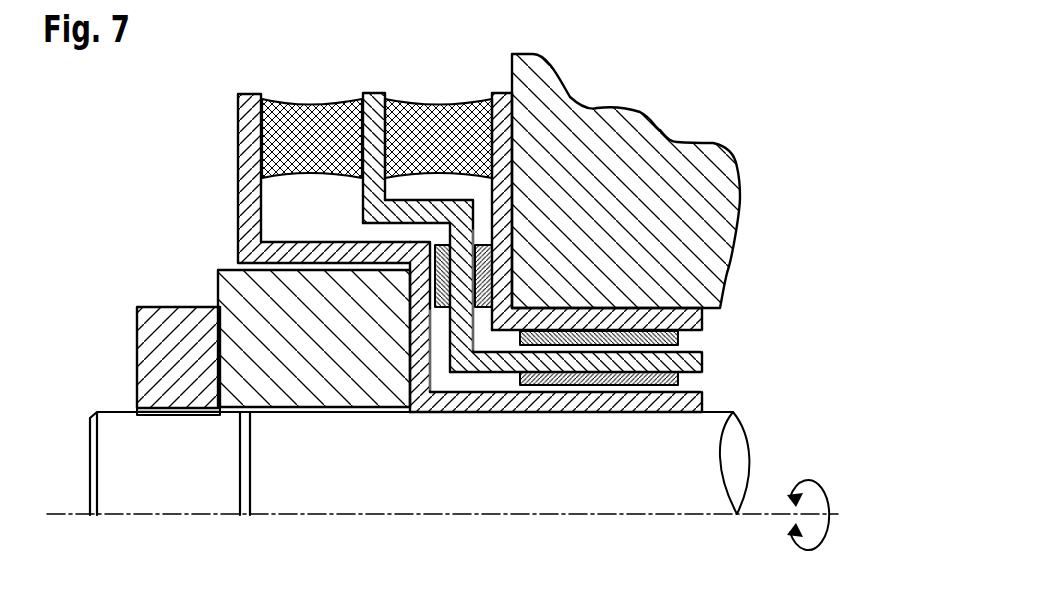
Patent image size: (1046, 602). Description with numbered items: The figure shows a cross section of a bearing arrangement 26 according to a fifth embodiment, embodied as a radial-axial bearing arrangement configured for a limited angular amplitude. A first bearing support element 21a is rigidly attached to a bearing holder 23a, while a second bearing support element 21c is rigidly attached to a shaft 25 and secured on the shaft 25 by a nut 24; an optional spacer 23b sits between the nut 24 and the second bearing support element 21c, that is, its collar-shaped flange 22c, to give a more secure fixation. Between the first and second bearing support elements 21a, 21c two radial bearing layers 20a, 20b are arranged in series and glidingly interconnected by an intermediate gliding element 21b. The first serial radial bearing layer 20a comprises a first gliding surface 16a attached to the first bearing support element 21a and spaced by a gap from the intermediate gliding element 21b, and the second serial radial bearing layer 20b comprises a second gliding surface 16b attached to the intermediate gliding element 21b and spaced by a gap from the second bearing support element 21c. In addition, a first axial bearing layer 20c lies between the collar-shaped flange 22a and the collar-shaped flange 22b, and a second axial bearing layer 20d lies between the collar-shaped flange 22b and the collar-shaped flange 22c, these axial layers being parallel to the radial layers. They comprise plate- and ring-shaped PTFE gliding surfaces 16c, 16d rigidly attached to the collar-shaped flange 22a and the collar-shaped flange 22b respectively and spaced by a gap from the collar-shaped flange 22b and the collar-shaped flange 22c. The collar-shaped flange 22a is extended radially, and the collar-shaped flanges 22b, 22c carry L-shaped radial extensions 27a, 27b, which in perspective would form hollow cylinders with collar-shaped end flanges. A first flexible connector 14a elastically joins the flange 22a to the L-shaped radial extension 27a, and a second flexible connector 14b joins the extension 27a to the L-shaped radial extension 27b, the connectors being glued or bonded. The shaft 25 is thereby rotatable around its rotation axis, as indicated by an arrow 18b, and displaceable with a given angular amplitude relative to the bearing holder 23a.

The first flexible connector 14a is at (433, 130).
The second flexible connector 14b is at (312, 130).
The first gliding surface 16a is at (685, 338).
The second gliding surface 16b is at (680, 377).
The gliding surface 16c is at (485, 268).
The gliding surface 16d is at (243, 305).
The arrow 18b is at (808, 550).
The first serial radial bearing layer 20a is at (707, 339).
The second serial radial bearing layer 20b is at (707, 374).
The first axial bearing layer 20c is at (482, 323).
The second axial bearing layer 20d is at (443, 323).
The first bearing support element 21a is at (663, 322).
The intermediate gliding element 21b is at (663, 360).
The second bearing support element 21c is at (658, 398).
The collar-shaped flange 22a is at (493, 120).
The collar-shaped flange 22b is at (460, 236).
The collar-shaped flange 22c is at (417, 353).
The bearing holder 23a is at (600, 130).
The spacer 23b is at (440, 278).
The nut 24 is at (155, 373).
The shaft 25 is at (618, 487).
The bearing arrangement 26 is at (306, 140).
The L-shaped radial extension 27a is at (370, 117).
The L-shaped radial extension 27b is at (250, 117).